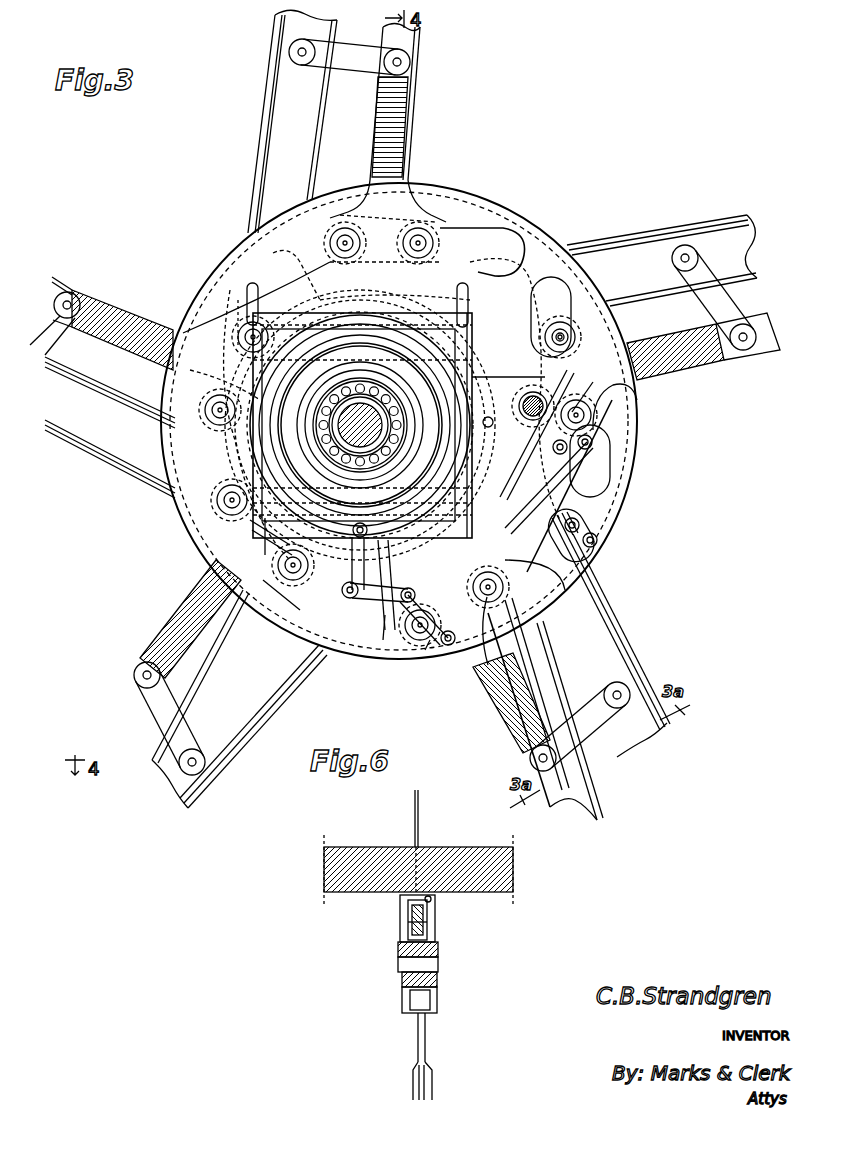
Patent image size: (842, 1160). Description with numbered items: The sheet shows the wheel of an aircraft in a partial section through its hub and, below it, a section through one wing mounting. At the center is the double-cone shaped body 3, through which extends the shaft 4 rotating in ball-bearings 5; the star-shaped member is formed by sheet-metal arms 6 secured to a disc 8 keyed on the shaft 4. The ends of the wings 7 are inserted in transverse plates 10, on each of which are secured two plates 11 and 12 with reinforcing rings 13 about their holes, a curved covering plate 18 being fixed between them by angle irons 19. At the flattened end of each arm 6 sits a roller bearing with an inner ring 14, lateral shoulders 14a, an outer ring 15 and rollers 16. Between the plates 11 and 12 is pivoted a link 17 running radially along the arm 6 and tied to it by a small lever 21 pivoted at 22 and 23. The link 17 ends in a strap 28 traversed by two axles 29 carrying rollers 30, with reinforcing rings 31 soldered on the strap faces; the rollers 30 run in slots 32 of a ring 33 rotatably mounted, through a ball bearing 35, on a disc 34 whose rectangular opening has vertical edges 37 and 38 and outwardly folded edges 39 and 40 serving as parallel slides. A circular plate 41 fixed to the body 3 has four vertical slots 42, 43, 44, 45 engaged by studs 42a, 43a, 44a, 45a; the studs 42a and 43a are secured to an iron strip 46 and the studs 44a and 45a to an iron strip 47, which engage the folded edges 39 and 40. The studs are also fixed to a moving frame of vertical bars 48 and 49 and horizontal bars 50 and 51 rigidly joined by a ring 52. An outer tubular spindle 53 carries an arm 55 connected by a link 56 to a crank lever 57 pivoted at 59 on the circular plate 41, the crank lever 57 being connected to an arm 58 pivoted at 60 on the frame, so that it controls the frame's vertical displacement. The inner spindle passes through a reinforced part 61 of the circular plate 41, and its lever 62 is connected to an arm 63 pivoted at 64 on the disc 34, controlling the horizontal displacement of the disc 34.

In FIG. 3, the double-cone shaped body 3 is at (385, 355).
In FIG. 3, the shaft 4 is at (362, 410).
In FIG. 3, the ball-bearings 5 is at (402, 416).
In FIG. 3, the arms 6 is at (615, 658).
In FIG. 6, the arms 6 is at (415, 1075).
In FIG. 6, the wings 7 is at (348, 858).
In FIG. 3, the disc 8 is at (297, 297).
In FIG. 6, the transverse plates 10 is at (420, 828).
In FIG. 6, the plate 11 is at (437, 925).
In FIG. 6, the plate 12 is at (405, 930).
In FIG. 6, the reinforcing ring 13 is at (438, 945).
In FIG. 6, the inner ring 14 is at (438, 978).
In FIG. 6, the lateral shoulders 14a is at (408, 998).
In FIG. 6, the outer ring 15 is at (437, 930).
In FIG. 6, the rollers 16 is at (437, 1000).
In FIG. 3, the link 17 is at (520, 723).
In FIG. 6, the covering plate 18 is at (431, 899).
In FIG. 6, the angle irons 19 is at (405, 915).
In FIG. 3, the small lever 21 is at (730, 310).
In FIG. 3, the pivot 22 is at (688, 250).
In FIG. 3, the pivot 23 is at (745, 348).
In FIG. 3, the strap 28 is at (633, 390).
In FIG. 3, the axles 29 is at (575, 330).
In FIG. 3, the rollers 30 is at (566, 450).
In FIG. 3, the reinforcing rings 31 is at (567, 323).
In FIG. 3, the slots 32 is at (470, 237).
In FIG. 3, the ring 33 is at (612, 527).
In FIG. 3, the disc 34 is at (480, 447).
In FIG. 3, the ball bearing 35 is at (533, 567).
In FIG. 3, the vertical edge 37 is at (253, 468).
In FIG. 3, the vertical edge 38 is at (545, 377).
In FIG. 3, the folded edge 39 is at (455, 318).
In FIG. 3, the folded edge 40 is at (385, 630).
In FIG. 3, the circular plate 41 is at (203, 317).
In FIG. 3, the vertical slot 42 is at (240, 312).
In FIG. 3, the stud 42a is at (243, 312).
In FIG. 3, the vertical slot 43 is at (477, 290).
In FIG. 3, the stud 43a is at (465, 300).
In FIG. 3, the vertical slot 44 is at (500, 605).
In FIG. 3, the stud 44a is at (470, 525).
In FIG. 3, the vertical slot 45 is at (258, 552).
In FIG. 3, the stud 45a is at (265, 518).
In FIG. 3, the iron strip 46 is at (215, 405).
In FIG. 3, the iron strip 47 is at (213, 500).
In FIG. 3, the vertical bar 48 is at (225, 442).
In FIG. 3, the vertical bar 49 is at (596, 542).
In FIG. 3, the horizontal bar 50 is at (307, 313).
In FIG. 3, the horizontal bar 51 is at (312, 578).
In FIG. 3, the ring 52 is at (263, 580).
In FIG. 3, the outer tubular spindle 53 is at (543, 420).
In FIG. 3, the arm 55 is at (570, 420).
In FIG. 3, the link 56 is at (465, 657).
In FIG. 3, the crank lever 57 is at (430, 640).
In FIG. 3, the arm 58 is at (343, 588).
In FIG. 3, the pivot 59 is at (385, 615).
In FIG. 3, the pivot 60 is at (360, 527).
In FIG. 3, the reinforced part 61 is at (580, 400).
In FIG. 3, the lever 62 is at (592, 446).
In FIG. 3, the arm 63 is at (578, 522).
In FIG. 3, the pivot 64 is at (488, 417).